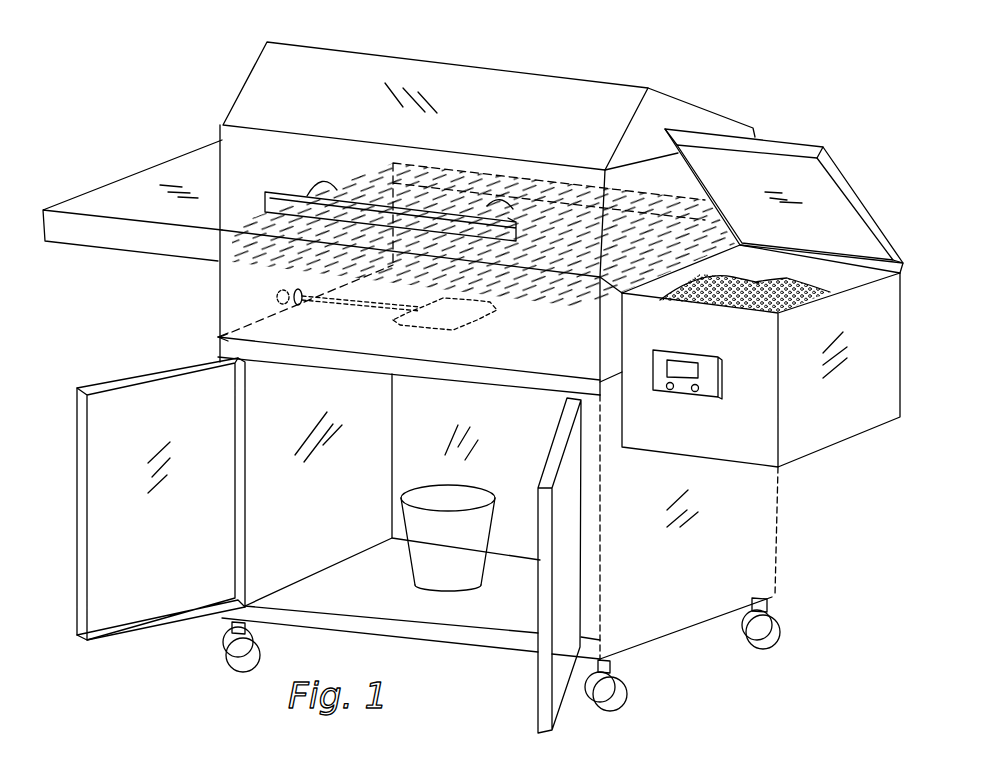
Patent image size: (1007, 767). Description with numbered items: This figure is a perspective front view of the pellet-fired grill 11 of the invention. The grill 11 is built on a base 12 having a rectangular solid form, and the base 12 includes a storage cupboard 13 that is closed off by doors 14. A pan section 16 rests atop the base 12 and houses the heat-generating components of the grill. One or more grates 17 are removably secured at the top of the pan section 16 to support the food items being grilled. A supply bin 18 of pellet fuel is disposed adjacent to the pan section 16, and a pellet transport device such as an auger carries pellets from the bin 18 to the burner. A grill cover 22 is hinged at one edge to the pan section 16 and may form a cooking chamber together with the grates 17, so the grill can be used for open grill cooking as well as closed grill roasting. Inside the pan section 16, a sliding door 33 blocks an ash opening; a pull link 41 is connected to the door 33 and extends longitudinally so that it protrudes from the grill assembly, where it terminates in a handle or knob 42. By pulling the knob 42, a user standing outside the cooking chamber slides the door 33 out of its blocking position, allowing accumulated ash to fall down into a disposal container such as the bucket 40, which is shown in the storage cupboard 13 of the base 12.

The pellet-fired grill 11 is at (503, 378).
The base 12 is at (715, 553).
The storage cupboard 13 is at (512, 580).
The doors 14 is at (145, 405).
The pan section 16 is at (235, 300).
The grates 17 is at (258, 252).
The supply bin 18 is at (850, 302).
The grill cover 22 is at (505, 100).
The door 33 is at (500, 313).
The bucket 40 is at (448, 538).
The pull link 41 is at (340, 303).
The knob 42 is at (277, 293).